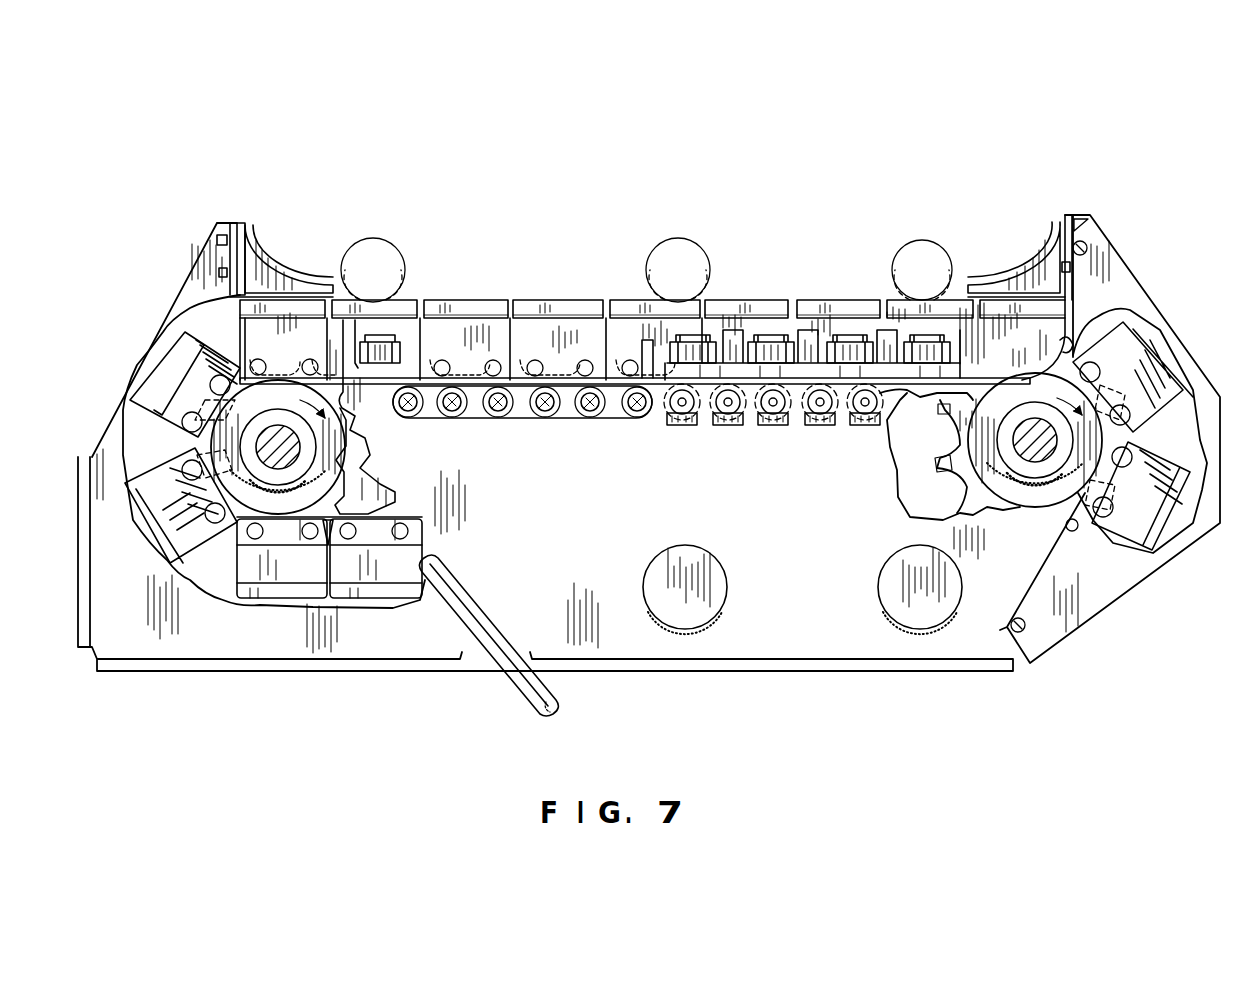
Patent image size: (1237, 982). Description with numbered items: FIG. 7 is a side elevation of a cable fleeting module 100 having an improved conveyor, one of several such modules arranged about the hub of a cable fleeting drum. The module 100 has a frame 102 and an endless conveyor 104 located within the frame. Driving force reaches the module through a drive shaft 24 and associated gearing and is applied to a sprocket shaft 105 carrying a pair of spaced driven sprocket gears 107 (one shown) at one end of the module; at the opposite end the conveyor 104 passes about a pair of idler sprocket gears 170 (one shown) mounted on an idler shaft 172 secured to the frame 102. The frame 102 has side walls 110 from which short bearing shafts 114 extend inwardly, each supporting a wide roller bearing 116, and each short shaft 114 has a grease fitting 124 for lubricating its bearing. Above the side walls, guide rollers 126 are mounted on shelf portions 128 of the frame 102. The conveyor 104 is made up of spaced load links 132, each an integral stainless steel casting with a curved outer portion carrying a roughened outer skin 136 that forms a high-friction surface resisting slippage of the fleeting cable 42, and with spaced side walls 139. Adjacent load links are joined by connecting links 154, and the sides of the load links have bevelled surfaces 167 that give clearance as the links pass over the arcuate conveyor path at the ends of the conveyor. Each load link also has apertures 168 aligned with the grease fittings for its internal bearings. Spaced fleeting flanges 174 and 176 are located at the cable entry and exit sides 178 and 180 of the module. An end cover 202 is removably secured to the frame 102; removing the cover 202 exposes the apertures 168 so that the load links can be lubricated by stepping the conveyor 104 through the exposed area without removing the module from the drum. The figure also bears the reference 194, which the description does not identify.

The drive shaft 24 is at (499, 666).
The fleeting cable 42 is at (383, 240).
The cable fleeting module 100 is at (772, 262).
The frame 102 is at (773, 676).
The conveyor 104 is at (563, 280).
The sprocket shaft 105 is at (272, 432).
The sprocket gears 107 is at (365, 418).
The side wall 110 is at (651, 655).
The short bearing shafts 114 is at (640, 418).
The wide roller bearing 116 is at (515, 418).
The grease fitting 124 is at (860, 425).
The guide rollers 126 is at (842, 350).
The shelf portion 128 is at (1003, 368).
The load link 132 is at (813, 298).
The roughened outer skin 136 is at (431, 303).
The side walls 139 is at (520, 330).
The connecting link 154 is at (165, 442).
The bevelled surfaces 167 is at (242, 360).
The apertures 168 is at (492, 360).
The idler sprocket gears 170 is at (943, 410).
The idler shaft 172 is at (1030, 452).
The fleeting flange 174 is at (251, 222).
The fleeting flange 176 is at (1062, 218).
The cable entry side 178 is at (291, 262).
The cable exit side 180 is at (985, 275).
The lower clamp block 194 is at (427, 545).
The end cover 202 is at (1128, 296).